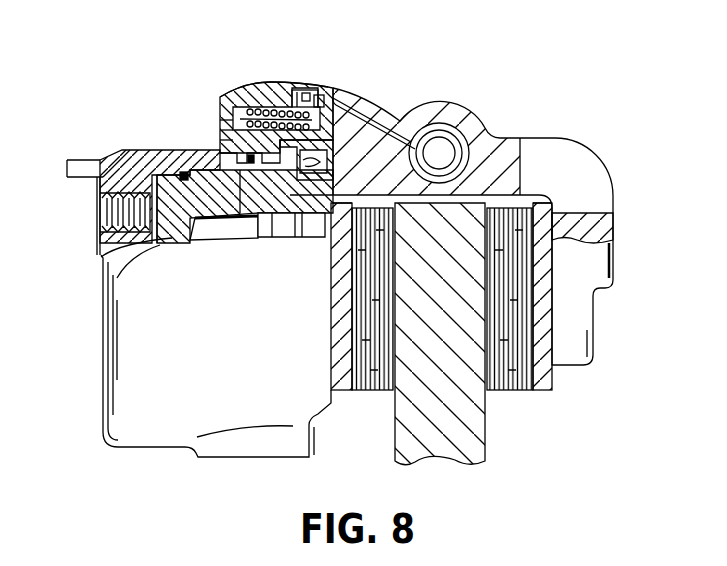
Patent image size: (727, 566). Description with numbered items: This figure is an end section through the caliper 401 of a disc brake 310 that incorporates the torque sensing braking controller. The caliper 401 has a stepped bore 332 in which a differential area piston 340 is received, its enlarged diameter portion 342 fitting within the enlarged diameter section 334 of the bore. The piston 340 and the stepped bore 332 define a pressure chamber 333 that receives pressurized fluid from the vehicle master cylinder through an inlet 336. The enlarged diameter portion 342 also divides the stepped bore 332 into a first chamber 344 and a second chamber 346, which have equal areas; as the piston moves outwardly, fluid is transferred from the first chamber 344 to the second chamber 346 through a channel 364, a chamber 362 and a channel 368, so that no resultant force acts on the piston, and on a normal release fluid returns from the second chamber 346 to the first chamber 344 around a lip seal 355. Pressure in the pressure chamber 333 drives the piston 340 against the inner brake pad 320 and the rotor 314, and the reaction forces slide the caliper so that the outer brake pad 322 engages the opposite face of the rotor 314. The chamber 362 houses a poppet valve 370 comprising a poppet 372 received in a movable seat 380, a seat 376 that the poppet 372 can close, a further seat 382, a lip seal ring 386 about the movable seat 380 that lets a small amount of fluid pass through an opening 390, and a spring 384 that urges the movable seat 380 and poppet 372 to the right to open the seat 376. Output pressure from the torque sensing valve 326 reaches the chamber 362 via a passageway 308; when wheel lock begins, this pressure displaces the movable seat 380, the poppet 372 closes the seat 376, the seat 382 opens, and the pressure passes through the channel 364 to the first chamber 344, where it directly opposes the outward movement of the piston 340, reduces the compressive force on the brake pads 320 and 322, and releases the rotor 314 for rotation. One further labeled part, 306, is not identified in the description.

The valve housing 306 is at (162, 175).
The passageway 308 is at (407, 117).
The disc brake 310 is at (174, 476).
The rotor 314 is at (420, 458).
The inner brake pad 320 is at (365, 387).
The outer brake pad 322 is at (502, 393).
The torque sensing valve 326 is at (503, 108).
The stepped bore 332 is at (127, 155).
The pressure chamber 333 is at (113, 268).
The enlarged diameter section 334 is at (176, 150).
The inlet 336 is at (112, 215).
The differential area piston 340 is at (178, 243).
The enlarged diameter portion 342 is at (232, 186).
The first chamber 344 is at (221, 138).
The second chamber 346 is at (212, 160).
The lip seal 355 is at (243, 197).
The chamber 362 is at (250, 92).
The channel 364 is at (268, 195).
The channel 368 is at (214, 132).
The poppet valve 370 is at (241, 51).
The poppet 372 is at (267, 97).
The seat 376 is at (256, 100).
The movable seat 380 is at (300, 93).
The seat 382 is at (312, 100).
The spring 384 is at (296, 97).
The lip seal ring 386 is at (308, 92).
The opening 390 is at (342, 100).
The caliper 401 is at (113, 150).